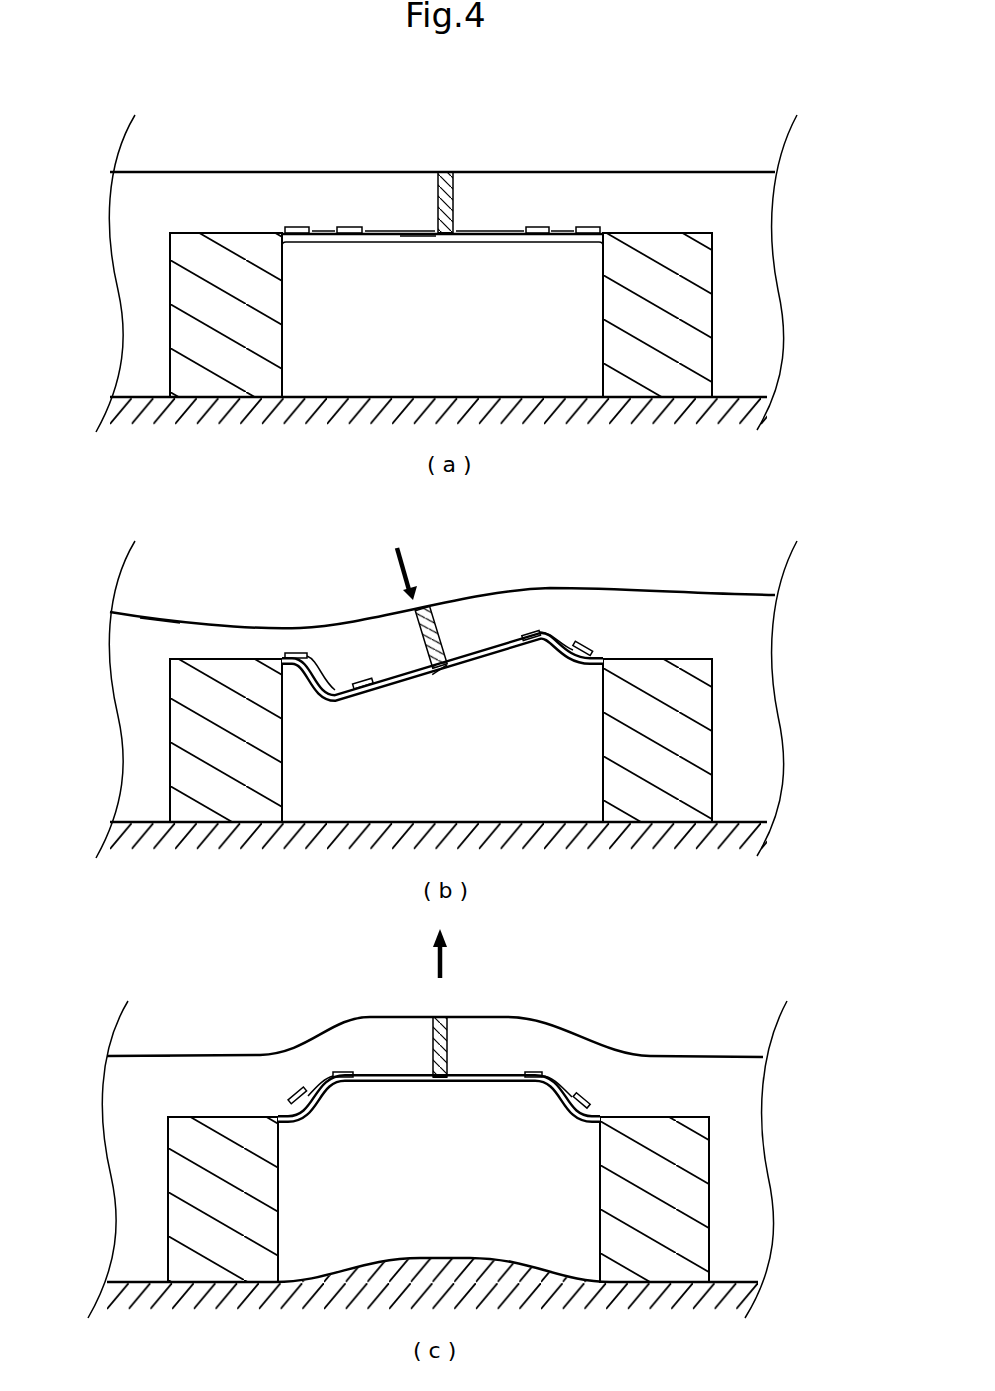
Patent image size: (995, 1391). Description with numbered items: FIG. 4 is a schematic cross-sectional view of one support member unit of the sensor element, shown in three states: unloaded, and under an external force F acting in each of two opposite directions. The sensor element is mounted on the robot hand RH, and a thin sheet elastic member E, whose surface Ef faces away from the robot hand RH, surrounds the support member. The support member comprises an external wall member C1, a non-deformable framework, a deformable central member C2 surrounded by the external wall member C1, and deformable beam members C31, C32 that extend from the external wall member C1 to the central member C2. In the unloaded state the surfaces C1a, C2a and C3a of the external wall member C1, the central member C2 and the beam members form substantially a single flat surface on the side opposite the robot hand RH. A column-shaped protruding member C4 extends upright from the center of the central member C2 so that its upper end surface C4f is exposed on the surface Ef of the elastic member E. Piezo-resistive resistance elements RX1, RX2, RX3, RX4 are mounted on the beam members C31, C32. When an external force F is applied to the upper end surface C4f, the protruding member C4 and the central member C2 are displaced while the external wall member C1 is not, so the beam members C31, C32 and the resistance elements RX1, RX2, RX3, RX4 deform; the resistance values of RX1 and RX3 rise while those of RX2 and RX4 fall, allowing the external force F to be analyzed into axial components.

The elastic member E is at (128, 218).
The surface of the elastic member Ef is at (158, 172).
The external wall member C1 is at (712, 278).
The surface of the external wall member C1a is at (218, 233).
The robot hand RH is at (748, 397).
The central member C2 is at (468, 233).
The surface of the central member C2a is at (420, 233).
The surface of the beam members C3a is at (322, 231).
The beam member C31 is at (323, 673).
The beam member C32 is at (562, 640).
The protruding member C4 is at (448, 172).
The upper end surface of the protruding member C4f is at (442, 172).
The resistance element RX1 is at (298, 228).
The resistance element RX2 is at (352, 228).
The resistance element RX3 is at (538, 228).
The resistance element RX4 is at (590, 228).
The external force F is at (422, 755).